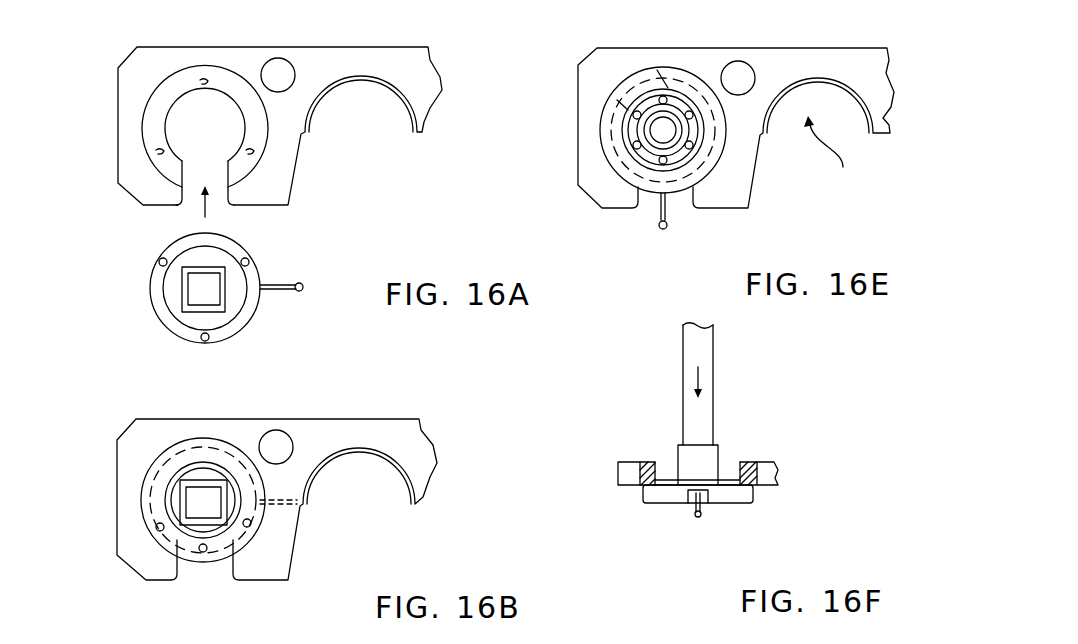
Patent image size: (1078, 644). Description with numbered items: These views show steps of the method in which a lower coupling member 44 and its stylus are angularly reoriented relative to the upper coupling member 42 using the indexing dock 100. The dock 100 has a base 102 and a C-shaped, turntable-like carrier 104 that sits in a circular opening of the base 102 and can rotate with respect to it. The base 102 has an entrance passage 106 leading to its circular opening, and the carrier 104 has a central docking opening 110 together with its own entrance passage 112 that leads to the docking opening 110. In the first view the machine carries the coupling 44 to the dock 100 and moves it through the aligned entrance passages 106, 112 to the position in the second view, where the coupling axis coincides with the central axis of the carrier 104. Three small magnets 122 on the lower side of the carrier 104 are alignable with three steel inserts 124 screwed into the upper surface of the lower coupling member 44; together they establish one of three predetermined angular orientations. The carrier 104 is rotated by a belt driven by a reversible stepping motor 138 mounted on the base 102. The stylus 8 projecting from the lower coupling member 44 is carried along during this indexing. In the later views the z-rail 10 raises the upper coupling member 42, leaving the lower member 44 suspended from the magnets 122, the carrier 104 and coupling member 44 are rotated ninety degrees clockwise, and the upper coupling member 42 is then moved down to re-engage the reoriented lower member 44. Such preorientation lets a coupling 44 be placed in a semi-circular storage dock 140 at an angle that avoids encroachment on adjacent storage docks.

In FIG. 16A, the indexing dock 100 is at (152, 185).
In FIG. 16E, the base 102 is at (608, 202).
In FIG. 16A, the carrier 104 is at (155, 107).
In FIG. 16B, the carrier 104 is at (178, 548).
In FIG. 16E, the carrier 104 is at (708, 172).
In FIG. 16F, the carrier 104 is at (755, 463).
In FIG. 16A, the entrance passage 106 is at (308, 198).
In FIG. 16A, the entrance passage 112 is at (218, 184).
In FIG. 16A, the docking opening 110 is at (205, 124).
In FIG. 16A, the magnets 122 is at (203, 84).
In FIG. 16A, the steel inserts 124 is at (163, 262).
In FIG. 16A, the stepping motor 138 is at (280, 70).
In FIG. 16E, the storage dock 140 is at (837, 156).
In FIG. 16A, the lower coupling member 44 is at (242, 318).
In FIG. 16B, the lower coupling member 44 is at (213, 556).
In FIG. 16E, the lower coupling member 44 is at (657, 130).
In FIG. 16F, the lower coupling member 44 is at (740, 497).
In FIG. 16A, the pin 8 is at (273, 290).
In FIG. 16B, the pin 8 is at (277, 523).
In FIG. 16E, the pin 8 is at (667, 218).
In FIG. 16F, the pin 8 is at (700, 516).
In FIG. 16F, the z-rail 10 is at (712, 368).
In FIG. 16F, the upper coupling member 42 is at (710, 460).